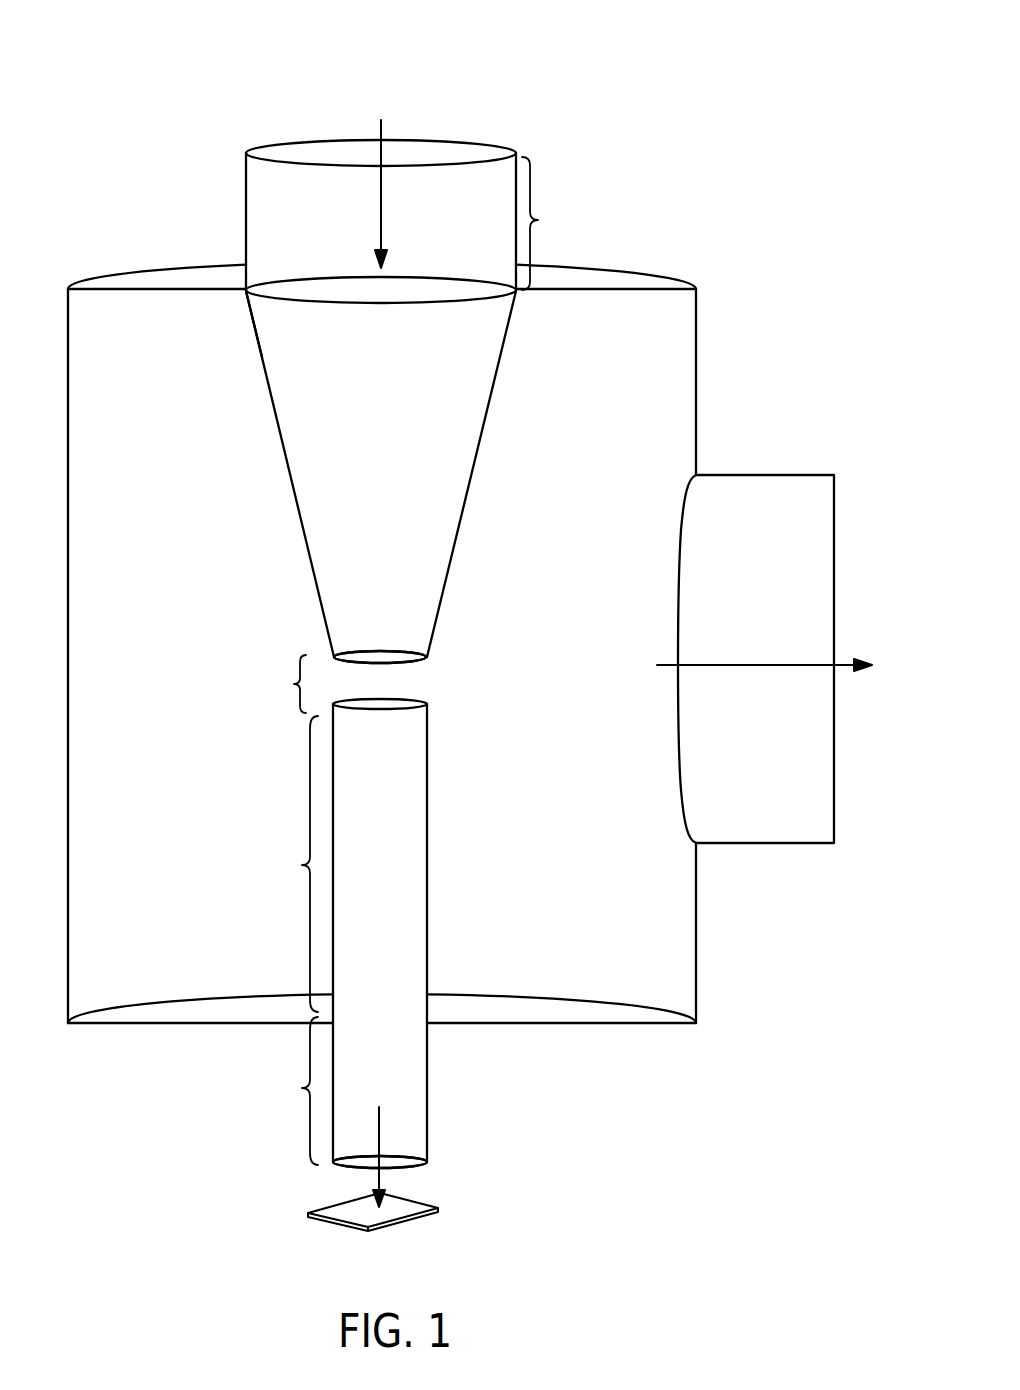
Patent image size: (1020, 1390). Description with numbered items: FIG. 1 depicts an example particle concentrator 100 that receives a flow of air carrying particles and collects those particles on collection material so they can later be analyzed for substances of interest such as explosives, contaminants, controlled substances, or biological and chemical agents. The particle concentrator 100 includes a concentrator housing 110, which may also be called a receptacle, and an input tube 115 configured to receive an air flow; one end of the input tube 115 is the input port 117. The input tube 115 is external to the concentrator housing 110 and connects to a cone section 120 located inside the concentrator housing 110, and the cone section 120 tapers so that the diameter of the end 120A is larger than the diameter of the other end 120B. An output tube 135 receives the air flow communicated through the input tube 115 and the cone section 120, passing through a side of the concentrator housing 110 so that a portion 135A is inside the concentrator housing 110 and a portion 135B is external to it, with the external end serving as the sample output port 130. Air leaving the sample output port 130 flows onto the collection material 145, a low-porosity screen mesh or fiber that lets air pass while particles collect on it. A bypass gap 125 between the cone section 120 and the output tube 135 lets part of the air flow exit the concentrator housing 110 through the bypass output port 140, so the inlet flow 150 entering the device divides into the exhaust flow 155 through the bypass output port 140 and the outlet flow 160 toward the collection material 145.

The particle concentrator 100 is at (382, 60).
The concentrator housing 110 is at (697, 387).
The input tube 115 is at (547, 223).
The input port 117 is at (507, 150).
The cone section 120 is at (552, 335).
The end of the cone section 120A is at (246, 291).
The other end of the cone section 120B is at (335, 657).
The bypass gap 125 is at (280, 684).
The sample output port 130 is at (333, 1164).
The output tube 135 is at (433, 718).
The portion of the output tube inside the concentrator housing 135A is at (284, 864).
The portion of the output tube external to the concentrator housing 135B is at (285, 1091).
The bypass output port 140 is at (822, 773).
The collection material 145 is at (398, 1224).
The inlet flow 150 is at (384, 157).
The exhaust flow 155 is at (737, 664).
The outlet flow 160 is at (382, 1180).